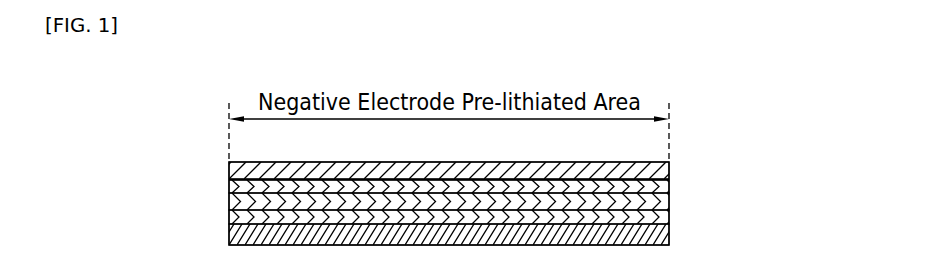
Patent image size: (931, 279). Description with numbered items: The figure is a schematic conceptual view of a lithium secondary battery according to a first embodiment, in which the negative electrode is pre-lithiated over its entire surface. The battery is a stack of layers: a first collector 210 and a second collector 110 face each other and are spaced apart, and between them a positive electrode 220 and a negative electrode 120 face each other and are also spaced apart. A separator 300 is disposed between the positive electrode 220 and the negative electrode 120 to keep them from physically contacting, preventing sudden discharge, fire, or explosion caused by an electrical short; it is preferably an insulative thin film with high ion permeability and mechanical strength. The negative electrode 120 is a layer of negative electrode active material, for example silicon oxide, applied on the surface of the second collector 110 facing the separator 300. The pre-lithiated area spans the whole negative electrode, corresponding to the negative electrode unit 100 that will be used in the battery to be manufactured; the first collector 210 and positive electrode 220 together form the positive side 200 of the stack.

The negative electrode unit 100 is at (380, 181).
The second collector 110 is at (229, 167).
The negative electrode 120 is at (229, 186).
The lithium metal transfer laminate 200 is at (520, 226).
The first collector 210 is at (669, 239).
The positive electrode 220 is at (669, 214).
The separator 300 is at (669, 200).